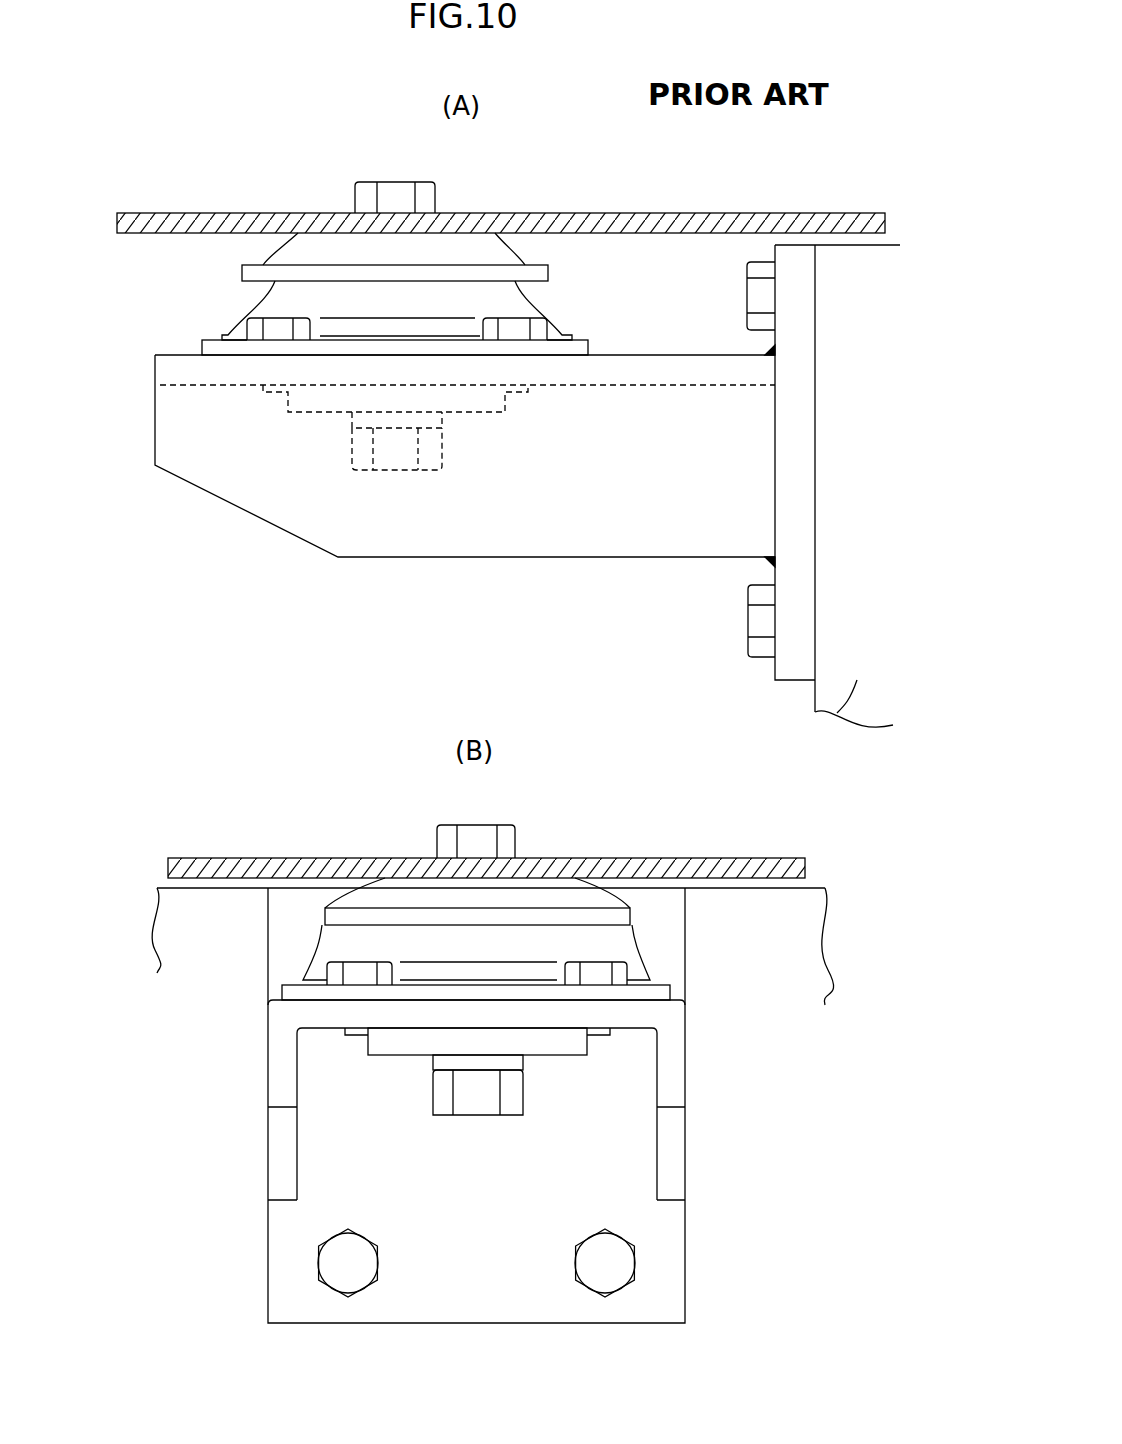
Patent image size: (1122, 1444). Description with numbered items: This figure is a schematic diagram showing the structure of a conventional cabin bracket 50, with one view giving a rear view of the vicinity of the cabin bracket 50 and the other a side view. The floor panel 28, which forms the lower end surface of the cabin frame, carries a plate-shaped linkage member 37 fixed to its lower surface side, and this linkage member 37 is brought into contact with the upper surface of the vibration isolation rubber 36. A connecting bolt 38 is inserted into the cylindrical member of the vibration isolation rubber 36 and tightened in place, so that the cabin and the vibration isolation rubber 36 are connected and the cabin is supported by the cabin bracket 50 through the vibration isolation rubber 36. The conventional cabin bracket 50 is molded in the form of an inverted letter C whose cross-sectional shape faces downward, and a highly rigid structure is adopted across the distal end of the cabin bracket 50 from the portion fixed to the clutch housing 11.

The floor panel 28 is at (222, 217).
The connecting bolt 38 is at (392, 198).
The linkage member 37 is at (470, 252).
The vibration isolation rubber 36 is at (500, 300).
The conventional cabin bracket 50 is at (267, 497).
The clutch housing 11 is at (893, 725).